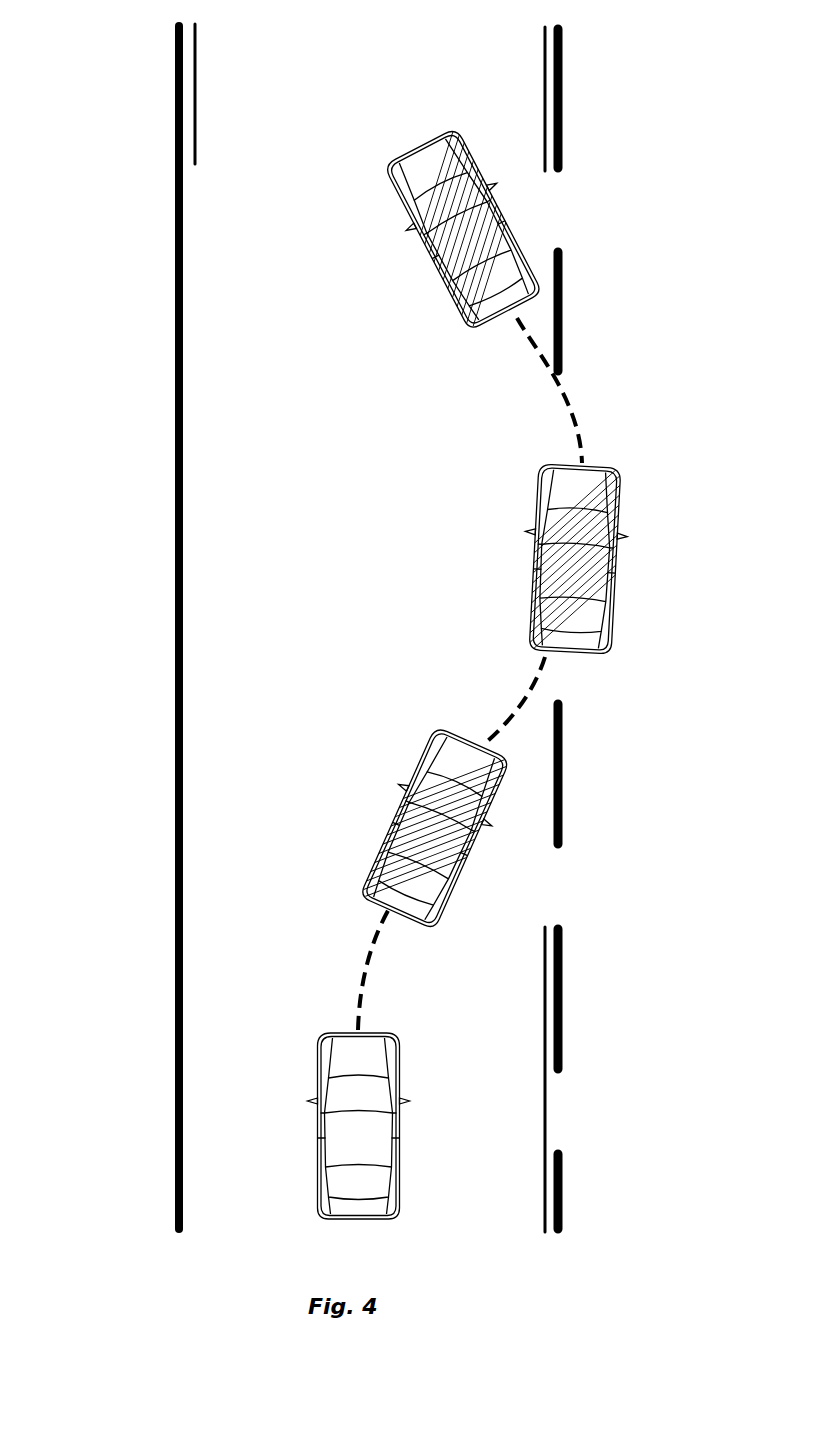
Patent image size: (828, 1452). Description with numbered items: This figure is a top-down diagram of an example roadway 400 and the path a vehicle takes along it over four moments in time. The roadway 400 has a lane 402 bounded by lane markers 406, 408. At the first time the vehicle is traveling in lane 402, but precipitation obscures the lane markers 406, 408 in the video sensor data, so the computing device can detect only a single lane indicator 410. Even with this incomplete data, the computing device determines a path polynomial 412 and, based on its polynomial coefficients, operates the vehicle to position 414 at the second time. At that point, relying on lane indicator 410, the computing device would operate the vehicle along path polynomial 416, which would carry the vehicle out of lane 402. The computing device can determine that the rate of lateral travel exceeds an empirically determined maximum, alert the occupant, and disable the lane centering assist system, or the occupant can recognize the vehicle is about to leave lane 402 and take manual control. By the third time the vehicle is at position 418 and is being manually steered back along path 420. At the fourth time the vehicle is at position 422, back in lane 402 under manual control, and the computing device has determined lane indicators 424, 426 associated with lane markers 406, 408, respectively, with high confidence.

The roadway 400 is at (389, 43).
The lane 402 is at (395, 1128).
The lane marker 406 is at (175, 978).
The lane marker 408 is at (562, 1017).
The lane indicator 410 is at (543, 957).
The path polynomial 412 is at (370, 937).
The position 414 is at (403, 803).
The path polynomial 416 is at (532, 683).
The position 418 is at (533, 555).
The path 420 is at (533, 345).
The position 422 is at (427, 250).
The lane indicator 424 is at (197, 100).
The lane indicator 426 is at (541, 30).